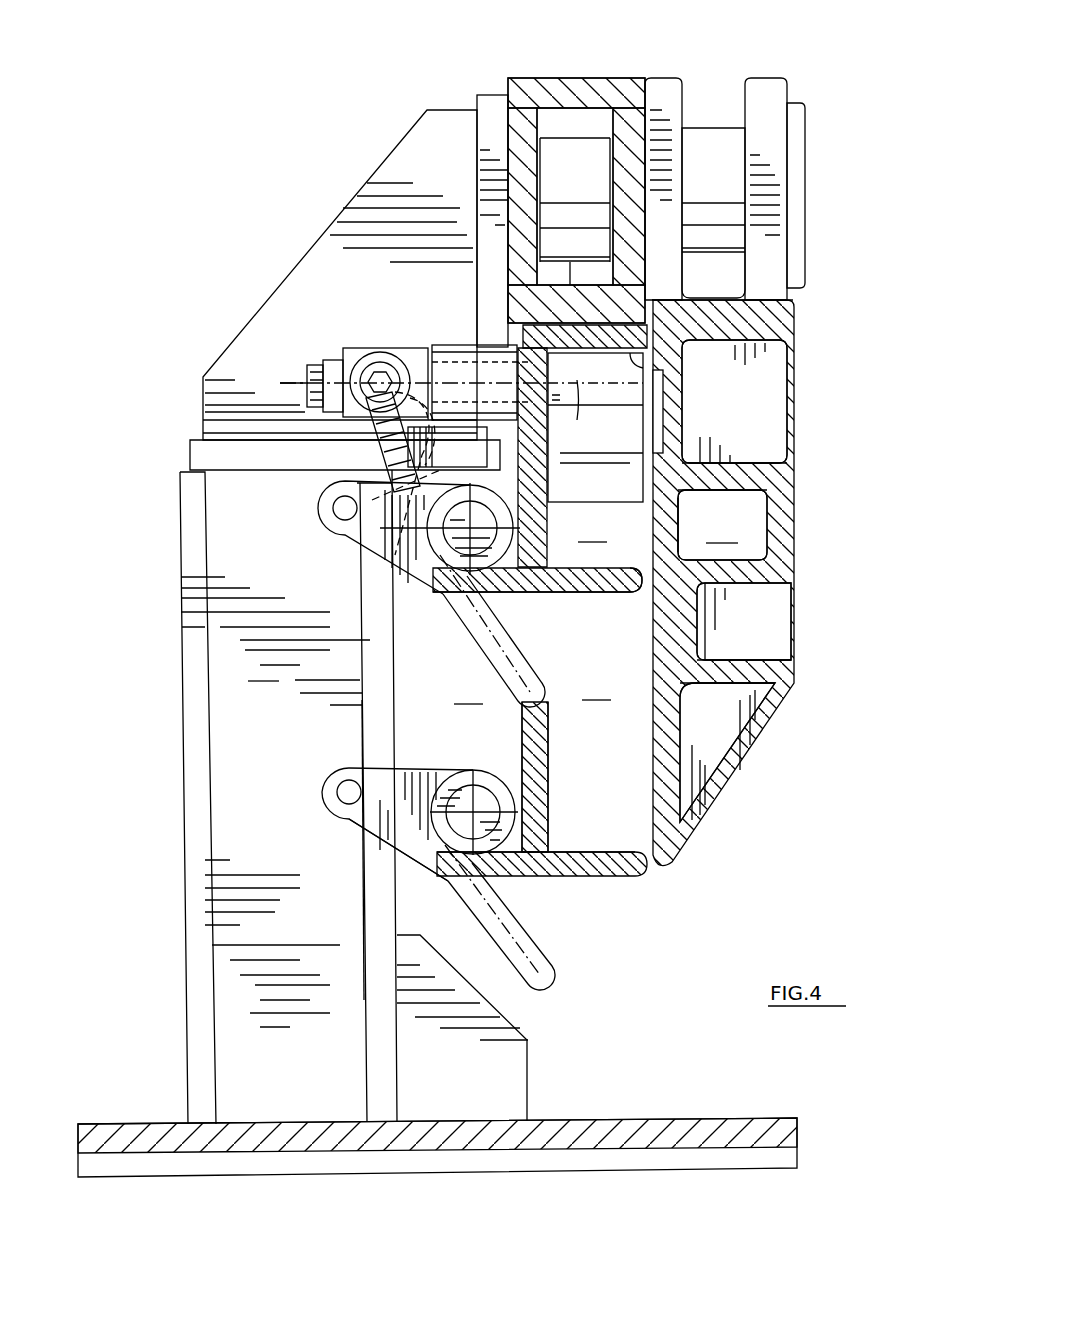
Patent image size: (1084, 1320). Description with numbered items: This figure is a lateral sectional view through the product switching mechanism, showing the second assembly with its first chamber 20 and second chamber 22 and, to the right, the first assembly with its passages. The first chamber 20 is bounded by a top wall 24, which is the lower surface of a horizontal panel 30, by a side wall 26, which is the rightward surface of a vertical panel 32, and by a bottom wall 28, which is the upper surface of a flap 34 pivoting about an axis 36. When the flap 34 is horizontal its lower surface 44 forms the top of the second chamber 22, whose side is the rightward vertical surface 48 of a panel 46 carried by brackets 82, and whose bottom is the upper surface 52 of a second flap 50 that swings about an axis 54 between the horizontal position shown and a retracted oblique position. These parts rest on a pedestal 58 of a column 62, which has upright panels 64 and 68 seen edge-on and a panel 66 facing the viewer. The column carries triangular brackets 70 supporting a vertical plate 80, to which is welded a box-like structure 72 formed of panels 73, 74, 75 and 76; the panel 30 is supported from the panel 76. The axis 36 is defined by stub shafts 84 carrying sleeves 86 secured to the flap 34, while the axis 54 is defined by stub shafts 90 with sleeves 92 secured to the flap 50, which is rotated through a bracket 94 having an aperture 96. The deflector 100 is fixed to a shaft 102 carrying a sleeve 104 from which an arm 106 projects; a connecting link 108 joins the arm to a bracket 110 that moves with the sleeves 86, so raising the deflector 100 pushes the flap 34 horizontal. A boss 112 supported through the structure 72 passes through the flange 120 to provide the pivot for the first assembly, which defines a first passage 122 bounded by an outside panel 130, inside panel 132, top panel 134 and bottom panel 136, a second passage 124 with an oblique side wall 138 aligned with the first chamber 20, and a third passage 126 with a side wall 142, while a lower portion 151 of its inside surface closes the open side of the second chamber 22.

The first chamber 20 is at (562, 457).
The second chamber 22 is at (579, 764).
The top wall 24 is at (690, 366).
The side wall 26 is at (552, 466).
The bottom wall 28 is at (582, 582).
The horizontal panel 30 is at (530, 336).
The vertical panel 32 is at (565, 500).
The flap 34 is at (610, 588).
The axis 36 is at (428, 571).
The lower surface 44 is at (543, 588).
The panel 46 is at (540, 798).
The rightward vertical surface 48 is at (552, 758).
The second flap 50 is at (614, 878).
The upper surface 52 is at (594, 850).
The axis 54 is at (432, 858).
The pedestal 58 is at (520, 1065).
The column 62 is at (183, 950).
The upright panel 64 is at (183, 744).
The upright panel 66 is at (301, 796).
The upright panel 68 is at (360, 702).
The triangular bracket 70 is at (272, 310).
The box-like structure 72 is at (583, 64).
The panel 73 is at (524, 78).
The panel 74 is at (538, 170).
The panel 75 is at (614, 176).
The panel 76 is at (572, 262).
The vertical plate 80 is at (485, 155).
The bracket 82 is at (492, 631).
The stub shaft 84 is at (462, 488).
The sleeve 86 is at (505, 578).
The stub shaft 90 is at (463, 790).
The sleeve 92 is at (505, 862).
The bracket 94 is at (375, 815).
The aperture 96 is at (340, 788).
The deflector 100 is at (632, 437).
The shaft 102 is at (308, 370).
The sleeve 104 is at (415, 346).
The arm 106 is at (372, 360).
The connecting link 108 is at (368, 440).
The bracket 110 is at (368, 550).
The boss 112 is at (805, 118).
The flange 120 is at (752, 78).
The first passage 122 is at (722, 525).
The second passage 124 is at (668, 414).
The third passage 126 is at (682, 602).
The outside panel 130 is at (790, 538).
The inside panel 132 is at (672, 520).
The top panel 134 is at (742, 472).
The bottom panel 136 is at (727, 585).
The side wall 138 is at (675, 400).
The side wall 142 is at (676, 637).
The lower portion 151 is at (665, 742).